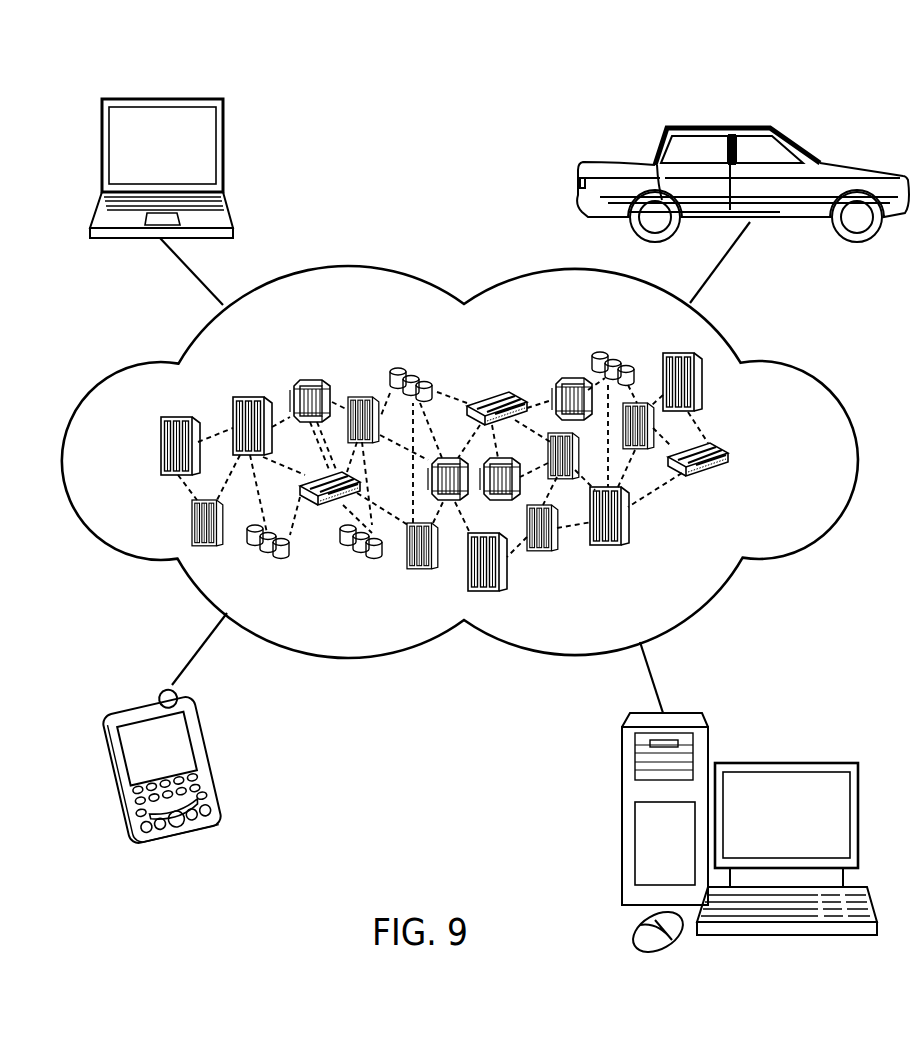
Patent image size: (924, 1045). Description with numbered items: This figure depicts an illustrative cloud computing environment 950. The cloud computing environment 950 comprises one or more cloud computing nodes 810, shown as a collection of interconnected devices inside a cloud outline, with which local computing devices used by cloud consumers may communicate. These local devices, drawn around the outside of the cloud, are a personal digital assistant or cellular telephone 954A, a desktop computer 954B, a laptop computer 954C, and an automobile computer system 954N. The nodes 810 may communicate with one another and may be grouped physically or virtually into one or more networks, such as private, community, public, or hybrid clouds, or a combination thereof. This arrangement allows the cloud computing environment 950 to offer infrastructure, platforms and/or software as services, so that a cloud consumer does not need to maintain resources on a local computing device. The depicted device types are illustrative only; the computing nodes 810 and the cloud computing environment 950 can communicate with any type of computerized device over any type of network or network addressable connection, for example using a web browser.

The cloud computing environment 950 is at (798, 365).
The cloud computing node 810 is at (746, 463).
The personal digital assistant (PDA) or cellular telephone 954A is at (142, 698).
The desktop computer 954B is at (785, 763).
The laptop computer 954C is at (160, 99).
The automobile computer system 954N is at (722, 127).